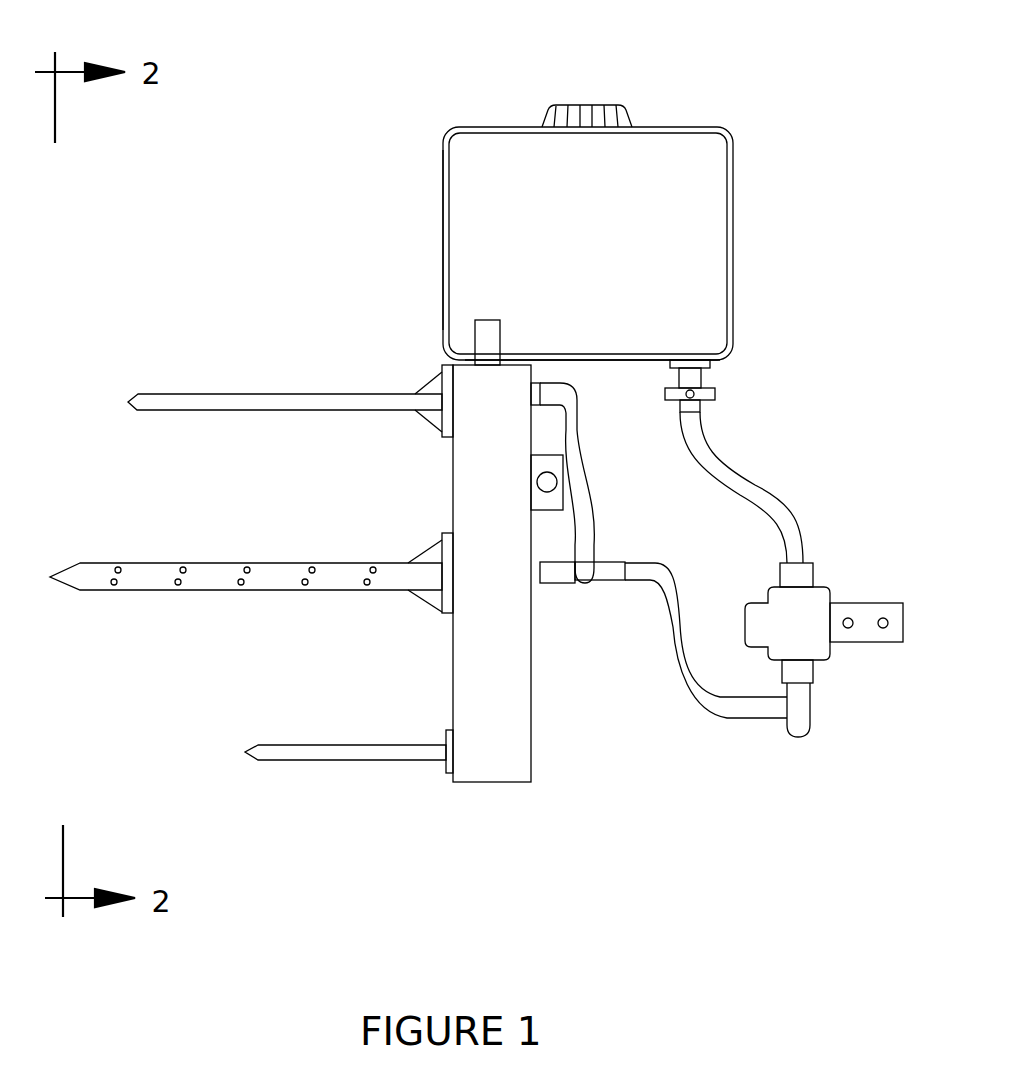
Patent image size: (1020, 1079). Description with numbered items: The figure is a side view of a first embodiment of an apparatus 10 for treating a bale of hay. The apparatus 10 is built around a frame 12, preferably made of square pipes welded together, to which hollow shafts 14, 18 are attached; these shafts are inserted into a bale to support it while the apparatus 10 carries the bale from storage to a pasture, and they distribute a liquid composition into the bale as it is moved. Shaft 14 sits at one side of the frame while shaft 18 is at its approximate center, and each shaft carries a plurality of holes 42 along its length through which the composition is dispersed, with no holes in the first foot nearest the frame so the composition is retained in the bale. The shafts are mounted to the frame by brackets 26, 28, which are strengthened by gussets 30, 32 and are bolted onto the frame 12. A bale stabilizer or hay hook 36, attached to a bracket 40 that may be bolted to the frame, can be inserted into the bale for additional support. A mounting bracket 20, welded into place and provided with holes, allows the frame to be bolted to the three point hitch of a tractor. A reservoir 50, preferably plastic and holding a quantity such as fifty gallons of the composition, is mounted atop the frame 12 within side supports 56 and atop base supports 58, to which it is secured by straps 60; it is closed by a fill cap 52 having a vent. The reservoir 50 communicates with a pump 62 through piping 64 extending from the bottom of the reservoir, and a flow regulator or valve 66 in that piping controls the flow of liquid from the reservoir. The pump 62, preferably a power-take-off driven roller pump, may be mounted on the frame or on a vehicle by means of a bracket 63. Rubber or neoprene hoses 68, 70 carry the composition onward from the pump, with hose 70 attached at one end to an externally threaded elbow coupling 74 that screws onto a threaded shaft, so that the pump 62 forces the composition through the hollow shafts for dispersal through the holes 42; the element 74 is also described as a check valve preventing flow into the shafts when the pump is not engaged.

The apparatus 10 is at (772, 66).
The frame 12 is at (533, 667).
The hollow shaft 14 is at (232, 394).
The hollow shaft 18 is at (121, 563).
The mounting bracket 20 is at (540, 500).
The bracket 26 is at (438, 438).
The bracket 28 is at (437, 615).
The gusset 30 is at (422, 378).
The gusset 32 is at (412, 600).
The hay hook 36 is at (342, 760).
The bracket 40 is at (442, 770).
The holes 42 is at (248, 567).
The reservoir 50 is at (705, 275).
The fill cap 52 is at (609, 101).
The side support 56 is at (490, 322).
The base support 58 is at (620, 369).
The strap 60 is at (442, 206).
The pump 62 is at (778, 635).
The bracket 63 is at (870, 618).
The piping 64 is at (742, 493).
The valve 66 is at (712, 391).
The hose 68 is at (706, 690).
The hose 70 is at (592, 505).
The elbow coupling 74 is at (804, 722).